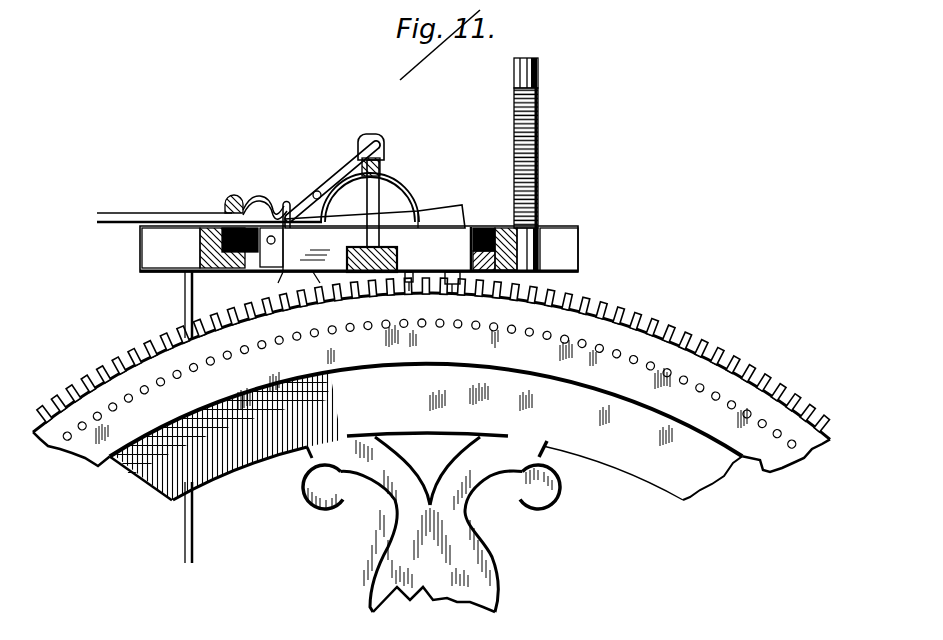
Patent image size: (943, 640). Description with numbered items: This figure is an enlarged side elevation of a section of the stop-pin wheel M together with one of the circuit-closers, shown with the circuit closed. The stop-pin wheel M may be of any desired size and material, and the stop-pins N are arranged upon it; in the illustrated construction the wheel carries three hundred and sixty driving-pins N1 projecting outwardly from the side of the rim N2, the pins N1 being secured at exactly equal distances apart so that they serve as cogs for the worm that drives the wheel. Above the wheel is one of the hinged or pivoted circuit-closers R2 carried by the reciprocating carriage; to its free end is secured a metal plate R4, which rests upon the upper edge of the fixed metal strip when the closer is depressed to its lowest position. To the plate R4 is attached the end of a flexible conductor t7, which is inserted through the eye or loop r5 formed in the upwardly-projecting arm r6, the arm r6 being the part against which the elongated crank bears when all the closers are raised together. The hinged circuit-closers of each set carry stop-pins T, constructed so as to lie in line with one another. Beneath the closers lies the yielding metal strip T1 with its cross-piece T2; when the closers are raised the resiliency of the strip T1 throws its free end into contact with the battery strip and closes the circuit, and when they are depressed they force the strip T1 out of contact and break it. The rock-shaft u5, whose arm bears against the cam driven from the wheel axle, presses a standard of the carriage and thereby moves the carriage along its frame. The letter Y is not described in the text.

The stop-pins N is at (431, 375).
The driving-pins N1 is at (236, 364).
The rim N2 is at (426, 420).
The stop-pin wheel M is at (431, 522).
The rock-shaft u5 is at (200, 417).
The flexible conductor t7 is at (209, 208).
The eyes or loops r5 is at (280, 207).
The upwardly-projecting arms r6 is at (332, 181).
The cross-piece T2 is at (370, 192).
The yielding metal strip T1 is at (410, 272).
The stop-pins T is at (453, 272).
The circuit-closer R2 is at (434, 224).
The metal plate R4 is at (480, 226).
The threaded post Y is at (510, 164).